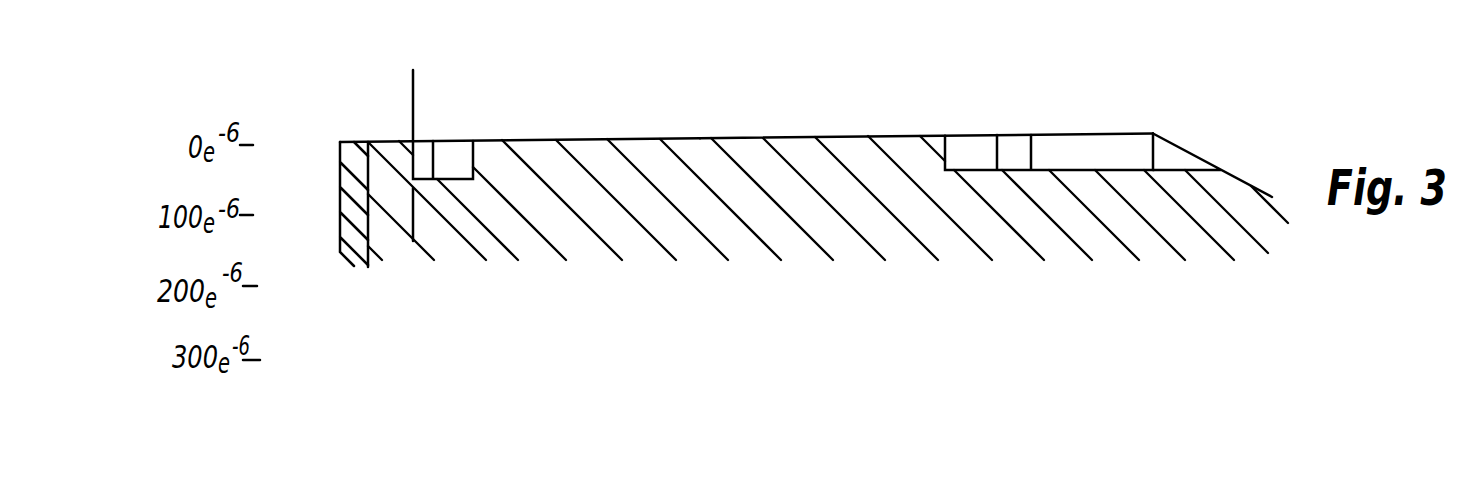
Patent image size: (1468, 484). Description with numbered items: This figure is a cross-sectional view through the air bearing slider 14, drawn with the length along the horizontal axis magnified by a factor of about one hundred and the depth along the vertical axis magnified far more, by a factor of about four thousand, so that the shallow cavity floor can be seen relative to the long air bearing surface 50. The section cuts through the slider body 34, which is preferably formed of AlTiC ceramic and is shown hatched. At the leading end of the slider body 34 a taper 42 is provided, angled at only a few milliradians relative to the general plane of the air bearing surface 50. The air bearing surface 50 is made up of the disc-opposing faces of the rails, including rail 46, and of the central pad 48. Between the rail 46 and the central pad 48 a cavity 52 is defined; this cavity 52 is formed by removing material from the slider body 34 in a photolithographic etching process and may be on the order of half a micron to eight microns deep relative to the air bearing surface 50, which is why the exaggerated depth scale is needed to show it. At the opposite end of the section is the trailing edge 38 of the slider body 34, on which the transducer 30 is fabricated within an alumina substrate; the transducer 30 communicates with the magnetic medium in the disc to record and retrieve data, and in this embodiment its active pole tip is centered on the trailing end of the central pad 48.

The slider 14 is at (588, 131).
The transducer 30 is at (340, 158).
The slider body 34 is at (662, 222).
The trailing edge 38 is at (368, 197).
The taper 42 is at (1247, 180).
The rail 46 is at (762, 163).
The central pad 48 is at (393, 160).
The air bearing surface 50 is at (687, 137).
The cavity 52 is at (453, 178).